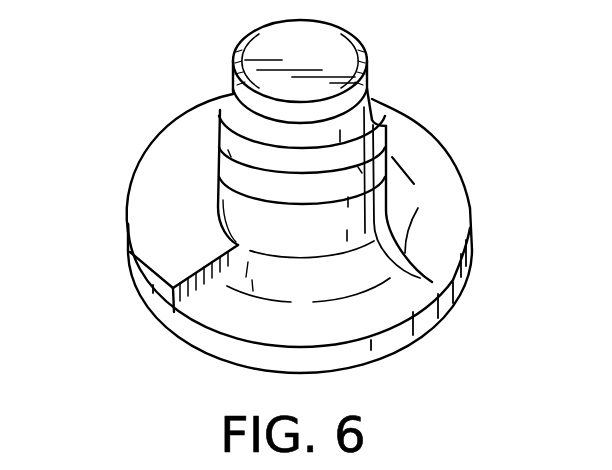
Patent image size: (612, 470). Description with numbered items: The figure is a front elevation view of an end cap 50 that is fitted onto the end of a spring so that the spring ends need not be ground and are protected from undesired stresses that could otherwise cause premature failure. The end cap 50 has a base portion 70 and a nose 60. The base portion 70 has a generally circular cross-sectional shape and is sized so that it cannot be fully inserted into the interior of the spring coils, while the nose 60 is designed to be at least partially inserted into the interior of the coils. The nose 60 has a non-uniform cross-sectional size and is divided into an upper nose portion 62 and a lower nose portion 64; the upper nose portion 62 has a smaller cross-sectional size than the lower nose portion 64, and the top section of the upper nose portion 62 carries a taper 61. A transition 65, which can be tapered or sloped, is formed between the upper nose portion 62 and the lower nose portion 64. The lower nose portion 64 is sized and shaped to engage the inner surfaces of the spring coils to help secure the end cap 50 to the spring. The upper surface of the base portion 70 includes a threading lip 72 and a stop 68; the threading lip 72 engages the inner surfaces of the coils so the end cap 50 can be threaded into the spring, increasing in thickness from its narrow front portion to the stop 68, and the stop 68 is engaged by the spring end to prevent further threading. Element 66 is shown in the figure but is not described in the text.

The end cap 50 is at (157, 108).
The nose 60 is at (372, 60).
The taper 61 is at (267, 110).
The upper nose portion 62 is at (349, 133).
The lower nose portion 64 is at (373, 197).
The transition 65 is at (243, 168).
The key block 66 is at (167, 238).
The stop 68 is at (238, 244).
The base portion 70 is at (439, 298).
The threading lip 72 is at (405, 173).